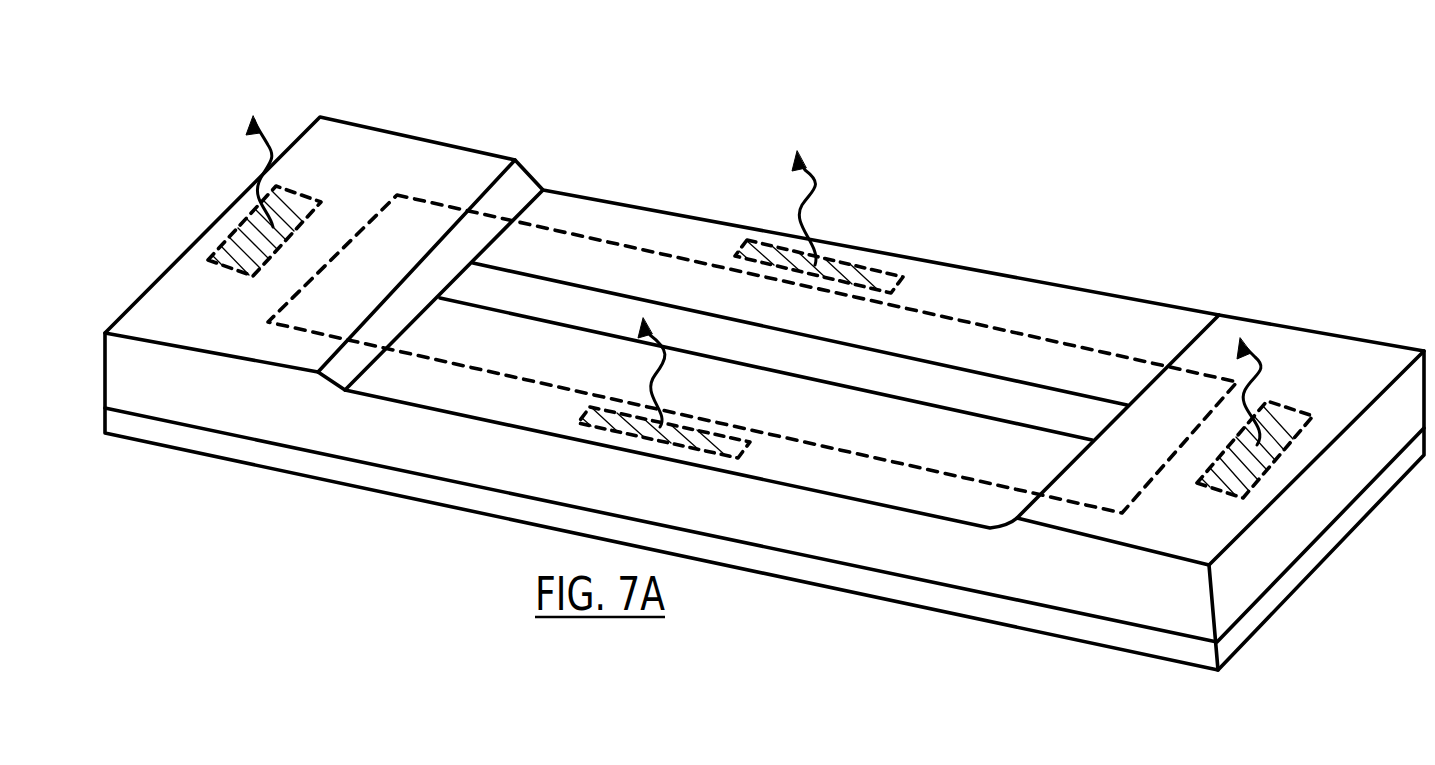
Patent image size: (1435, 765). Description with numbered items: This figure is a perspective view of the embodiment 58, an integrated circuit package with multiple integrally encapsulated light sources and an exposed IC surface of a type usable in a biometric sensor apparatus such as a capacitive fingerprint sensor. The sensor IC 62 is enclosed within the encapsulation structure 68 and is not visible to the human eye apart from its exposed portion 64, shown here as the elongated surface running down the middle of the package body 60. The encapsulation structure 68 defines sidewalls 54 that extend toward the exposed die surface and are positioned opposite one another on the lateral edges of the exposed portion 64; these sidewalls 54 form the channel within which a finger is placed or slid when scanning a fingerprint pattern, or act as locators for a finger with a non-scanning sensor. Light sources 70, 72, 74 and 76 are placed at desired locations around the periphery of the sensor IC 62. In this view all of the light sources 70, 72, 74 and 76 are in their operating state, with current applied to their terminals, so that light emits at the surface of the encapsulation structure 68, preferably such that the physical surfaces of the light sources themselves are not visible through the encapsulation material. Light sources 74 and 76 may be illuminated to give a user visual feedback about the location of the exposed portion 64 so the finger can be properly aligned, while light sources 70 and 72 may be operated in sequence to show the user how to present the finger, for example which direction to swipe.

The embodiment 58 is at (933, 148).
The substrate body 60 is at (1088, 625).
The sensor IC 62 is at (540, 223).
The exposed portion 64 is at (962, 380).
The encapsulation structure 68 is at (486, 402).
The sidewalls 54 is at (340, 368).
The light source 70 is at (703, 457).
The light source 72 is at (883, 259).
The light source 74 is at (243, 222).
The light source 76 is at (1307, 462).